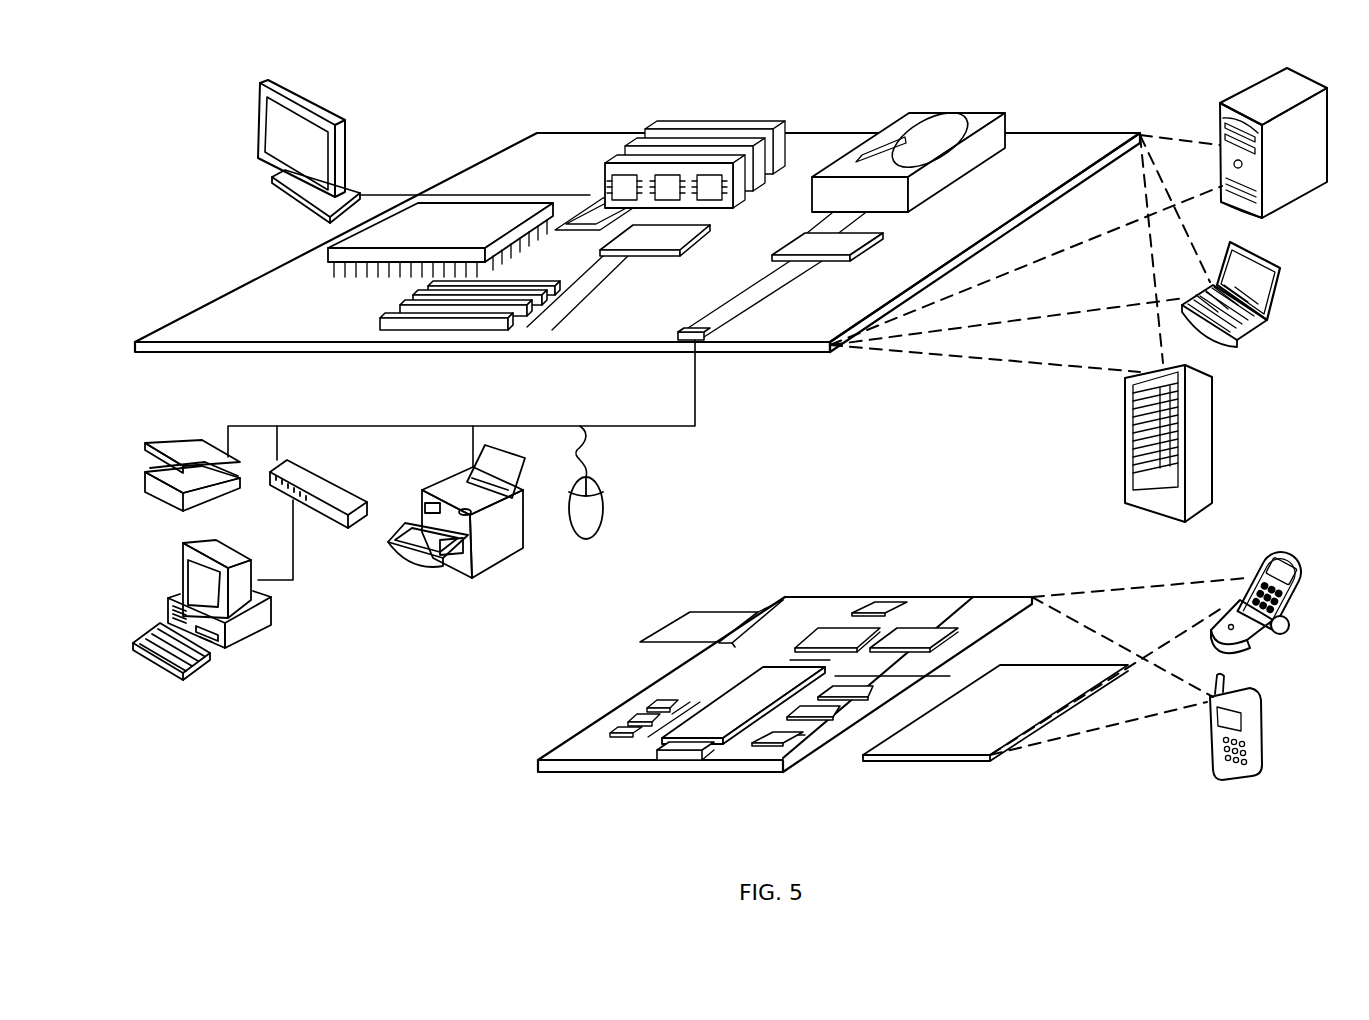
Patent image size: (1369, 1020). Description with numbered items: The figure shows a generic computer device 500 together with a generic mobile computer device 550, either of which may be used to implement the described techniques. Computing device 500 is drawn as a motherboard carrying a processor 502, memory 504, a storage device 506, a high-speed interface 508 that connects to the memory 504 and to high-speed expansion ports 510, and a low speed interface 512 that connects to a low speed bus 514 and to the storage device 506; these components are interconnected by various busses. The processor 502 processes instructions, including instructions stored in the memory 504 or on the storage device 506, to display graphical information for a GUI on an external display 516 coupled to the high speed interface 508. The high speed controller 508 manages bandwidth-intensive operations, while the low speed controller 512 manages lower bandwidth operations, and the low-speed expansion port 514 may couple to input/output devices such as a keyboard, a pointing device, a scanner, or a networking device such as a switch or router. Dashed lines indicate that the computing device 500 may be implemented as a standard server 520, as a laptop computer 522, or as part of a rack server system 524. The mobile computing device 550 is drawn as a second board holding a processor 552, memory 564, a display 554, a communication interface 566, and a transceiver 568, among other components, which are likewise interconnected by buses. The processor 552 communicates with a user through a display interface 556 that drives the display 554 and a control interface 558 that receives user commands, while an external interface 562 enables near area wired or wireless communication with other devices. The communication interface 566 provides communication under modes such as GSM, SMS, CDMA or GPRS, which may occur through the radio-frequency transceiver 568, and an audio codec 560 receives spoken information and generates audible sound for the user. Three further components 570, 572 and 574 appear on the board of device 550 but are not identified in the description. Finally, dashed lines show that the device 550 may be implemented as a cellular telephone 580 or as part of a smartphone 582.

The computing device 500 is at (457, 103).
The processor 502 is at (328, 253).
The memory 504 is at (668, 128).
The storage device 506 is at (905, 115).
The high-speed interface 508 is at (634, 238).
The high-speed expansion ports 510 is at (403, 312).
The low speed interface 512 is at (807, 238).
The low speed bus 514 is at (704, 340).
The display 516 is at (262, 84).
The standard server 520 is at (1218, 117).
The laptop computer 522 is at (1283, 268).
The rack server system 524 is at (1125, 467).
The mobile computer device 550 is at (513, 774).
The processor 552 is at (716, 728).
The display 554 is at (958, 748).
The display interface 556 is at (790, 744).
The control interface 558 is at (820, 717).
The audio codec 560 is at (848, 697).
The external interface 562 is at (680, 753).
The memory 564 is at (628, 718).
The communication interface 566 is at (837, 638).
The transceiver 568 is at (913, 636).
The small component 570 is at (888, 605).
The edge strip / antenna 572 is at (760, 612).
The battery pad 574 is at (692, 612).
The cellular telephone 580 is at (1268, 556).
The smartphone 582 is at (1207, 737).